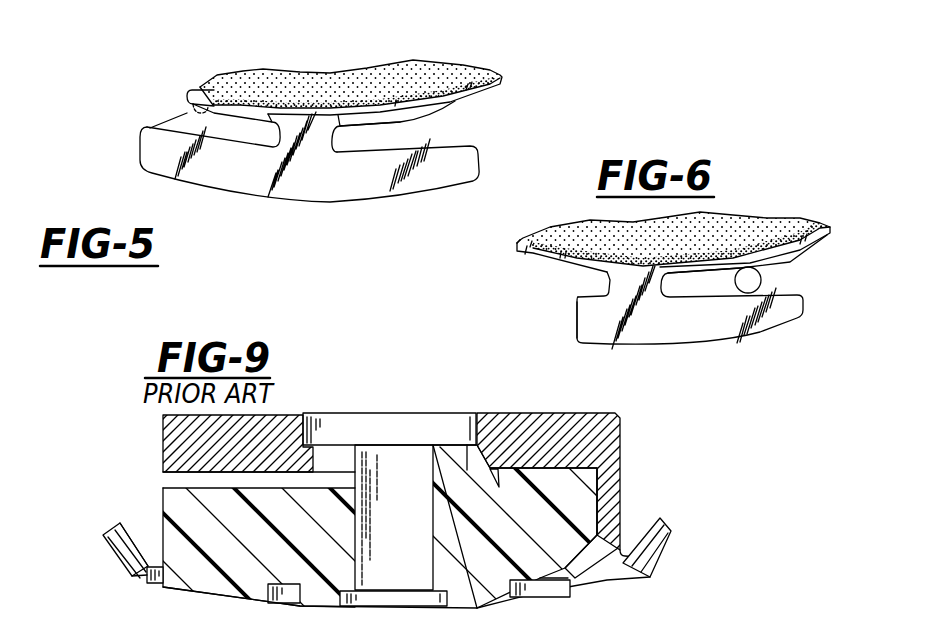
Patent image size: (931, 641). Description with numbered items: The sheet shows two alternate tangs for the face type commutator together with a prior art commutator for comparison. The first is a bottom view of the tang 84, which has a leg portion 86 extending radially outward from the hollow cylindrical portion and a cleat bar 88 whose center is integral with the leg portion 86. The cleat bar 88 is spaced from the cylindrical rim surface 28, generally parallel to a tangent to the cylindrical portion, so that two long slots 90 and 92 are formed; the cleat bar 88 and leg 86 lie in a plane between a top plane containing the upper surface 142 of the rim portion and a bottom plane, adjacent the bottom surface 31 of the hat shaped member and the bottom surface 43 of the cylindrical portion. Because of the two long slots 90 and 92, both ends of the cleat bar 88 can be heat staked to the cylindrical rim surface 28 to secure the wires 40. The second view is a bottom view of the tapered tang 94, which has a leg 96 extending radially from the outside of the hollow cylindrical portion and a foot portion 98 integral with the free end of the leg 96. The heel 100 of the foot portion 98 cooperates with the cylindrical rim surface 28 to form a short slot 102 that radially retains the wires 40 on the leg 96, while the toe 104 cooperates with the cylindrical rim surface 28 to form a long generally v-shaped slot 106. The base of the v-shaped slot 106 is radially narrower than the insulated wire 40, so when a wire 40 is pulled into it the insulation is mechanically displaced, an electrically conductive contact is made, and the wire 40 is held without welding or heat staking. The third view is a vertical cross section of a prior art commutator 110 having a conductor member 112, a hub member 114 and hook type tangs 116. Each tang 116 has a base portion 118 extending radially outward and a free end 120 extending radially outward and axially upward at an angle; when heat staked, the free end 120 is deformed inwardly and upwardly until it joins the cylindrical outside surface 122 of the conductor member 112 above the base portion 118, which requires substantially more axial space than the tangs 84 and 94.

In FIG. 5, the cylindrical rim surface 28 is at (212, 90).
In FIG. 6, the cylindrical rim surface 28 is at (532, 253).
In FIG. 5, the bottom surface 31 is at (493, 88).
In FIG. 6, the wire 40 is at (752, 265).
In FIG. 6, the bottom surface 43 is at (527, 252).
In FIG. 5, the tang 84 is at (237, 206).
In FIG. 5, the leg portion 86 is at (305, 125).
In FIG. 5, the cleat bar 88 is at (160, 152).
In FIG. 5, the long slot 90 is at (180, 117).
In FIG. 5, the long slot 92 is at (445, 123).
In FIG. 6, the tang 94 is at (622, 350).
In FIG. 6, the leg 96 is at (572, 288).
In FIG. 6, the foot portion 98 is at (648, 333).
In FIG. 6, the heel 100 is at (578, 322).
In FIG. 6, the short slot 102 is at (580, 297).
In FIG. 6, the toe 104 is at (775, 323).
In FIG. 6, the v-shaped slot 106 is at (790, 270).
In FIG. 9, the prior art commutator 110 is at (387, 506).
In FIG. 9, the conductor member 112 is at (622, 449).
In FIG. 9, the hub member 114 is at (218, 587).
In FIG. 9, the tang 116 is at (120, 553).
In FIG. 9, the base portion 118 is at (147, 580).
In FIG. 9, the free end 120 is at (117, 520).
In FIG. 9, the cylindrical outside surface 122 is at (622, 497).
In FIG. 5, the upper surface 142 is at (362, 178).